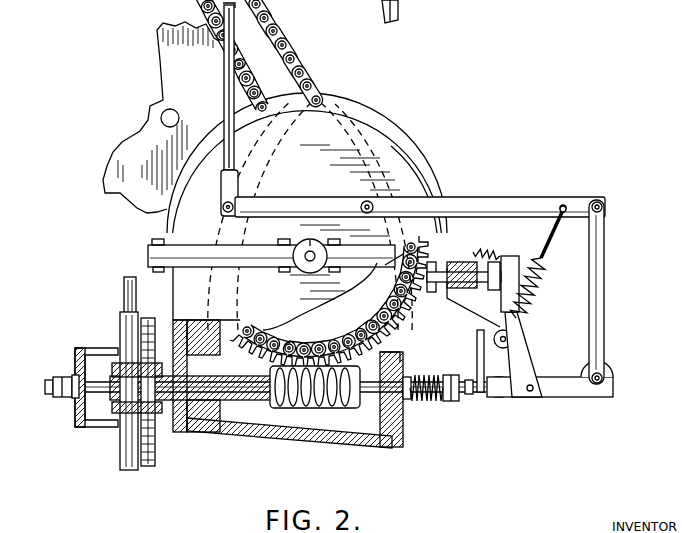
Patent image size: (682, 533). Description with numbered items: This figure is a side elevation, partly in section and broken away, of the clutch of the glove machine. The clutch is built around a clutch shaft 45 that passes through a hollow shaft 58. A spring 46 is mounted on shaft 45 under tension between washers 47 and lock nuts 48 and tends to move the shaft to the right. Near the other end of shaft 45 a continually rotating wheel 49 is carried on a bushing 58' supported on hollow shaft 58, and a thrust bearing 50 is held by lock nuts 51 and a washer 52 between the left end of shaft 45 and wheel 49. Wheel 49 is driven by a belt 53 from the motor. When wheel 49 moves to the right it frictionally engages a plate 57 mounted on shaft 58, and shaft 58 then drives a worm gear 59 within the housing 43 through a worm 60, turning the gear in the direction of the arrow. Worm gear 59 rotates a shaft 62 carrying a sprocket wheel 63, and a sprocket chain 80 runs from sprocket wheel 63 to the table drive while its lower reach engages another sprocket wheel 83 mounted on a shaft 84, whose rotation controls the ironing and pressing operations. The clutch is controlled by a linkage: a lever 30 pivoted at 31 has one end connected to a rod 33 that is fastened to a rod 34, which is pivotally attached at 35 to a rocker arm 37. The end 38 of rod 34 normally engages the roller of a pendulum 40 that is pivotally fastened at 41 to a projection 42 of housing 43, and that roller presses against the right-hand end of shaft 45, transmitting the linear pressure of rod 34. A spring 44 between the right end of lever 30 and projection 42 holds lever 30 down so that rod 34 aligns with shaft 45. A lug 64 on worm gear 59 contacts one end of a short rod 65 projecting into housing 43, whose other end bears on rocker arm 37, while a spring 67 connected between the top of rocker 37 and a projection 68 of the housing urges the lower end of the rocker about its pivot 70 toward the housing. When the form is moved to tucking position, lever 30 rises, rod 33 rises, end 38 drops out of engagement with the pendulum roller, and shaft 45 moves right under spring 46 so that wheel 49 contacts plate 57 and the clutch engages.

The lever 30 is at (463, 206).
The pivot 31 is at (360, 205).
The rod 33 is at (604, 292).
The rod 34 is at (584, 392).
The pivot 35 is at (532, 396).
The rocker arm 37 is at (522, 338).
The end of rod 34 38 is at (493, 390).
The pendulum 40 is at (477, 368).
The pivot 41 is at (477, 338).
The projection 42 is at (465, 327).
The housing 43 is at (403, 178).
The spring 44 is at (547, 250).
The clutch shaft 45 is at (373, 394).
The spring 46 is at (432, 398).
The washers 47 is at (450, 400).
The lock nuts 48 is at (468, 396).
The wheel 49 is at (120, 452).
The thrust bearing 50 is at (90, 424).
The lock nuts 51 is at (58, 396).
The washer 52 is at (77, 370).
The belt 53 is at (123, 290).
The plate 57 is at (147, 468).
The hollow shaft 58 is at (195, 397).
The bushing 58' is at (105, 365).
The worm gear 59 is at (240, 342).
The worm 60 is at (300, 408).
The shaft 62 is at (288, 246).
The sprocket wheel 63 is at (312, 322).
The lug 64 is at (330, 300).
The short rod 65 is at (452, 262).
The spring 67 is at (520, 262).
The projection 68 is at (488, 255).
The pivot 70 is at (521, 318).
The sprocket chain 80 is at (291, 50).
The sprocket wheel 83 is at (111, 159).
The shaft 84 is at (163, 112).